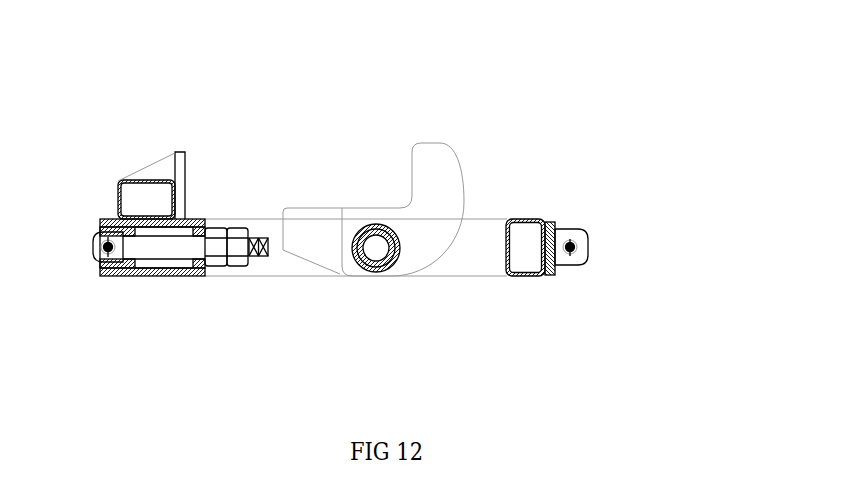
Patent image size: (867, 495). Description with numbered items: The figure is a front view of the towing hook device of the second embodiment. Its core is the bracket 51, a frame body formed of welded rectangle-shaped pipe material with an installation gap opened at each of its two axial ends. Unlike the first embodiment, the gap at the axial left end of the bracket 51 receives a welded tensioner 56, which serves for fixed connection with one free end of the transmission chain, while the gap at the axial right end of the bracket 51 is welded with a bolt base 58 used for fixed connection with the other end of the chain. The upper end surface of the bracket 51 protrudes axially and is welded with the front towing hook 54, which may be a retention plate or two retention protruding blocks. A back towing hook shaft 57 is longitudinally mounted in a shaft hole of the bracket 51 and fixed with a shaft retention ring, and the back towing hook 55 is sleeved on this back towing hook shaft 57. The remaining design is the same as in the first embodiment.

The bracket 51 is at (483, 237).
The front towing hook 54 is at (163, 163).
The back towing hook 55 is at (450, 178).
The tensioner 56 is at (230, 238).
The back towing hook shaft 57 is at (374, 251).
The bolt base 58 is at (582, 240).